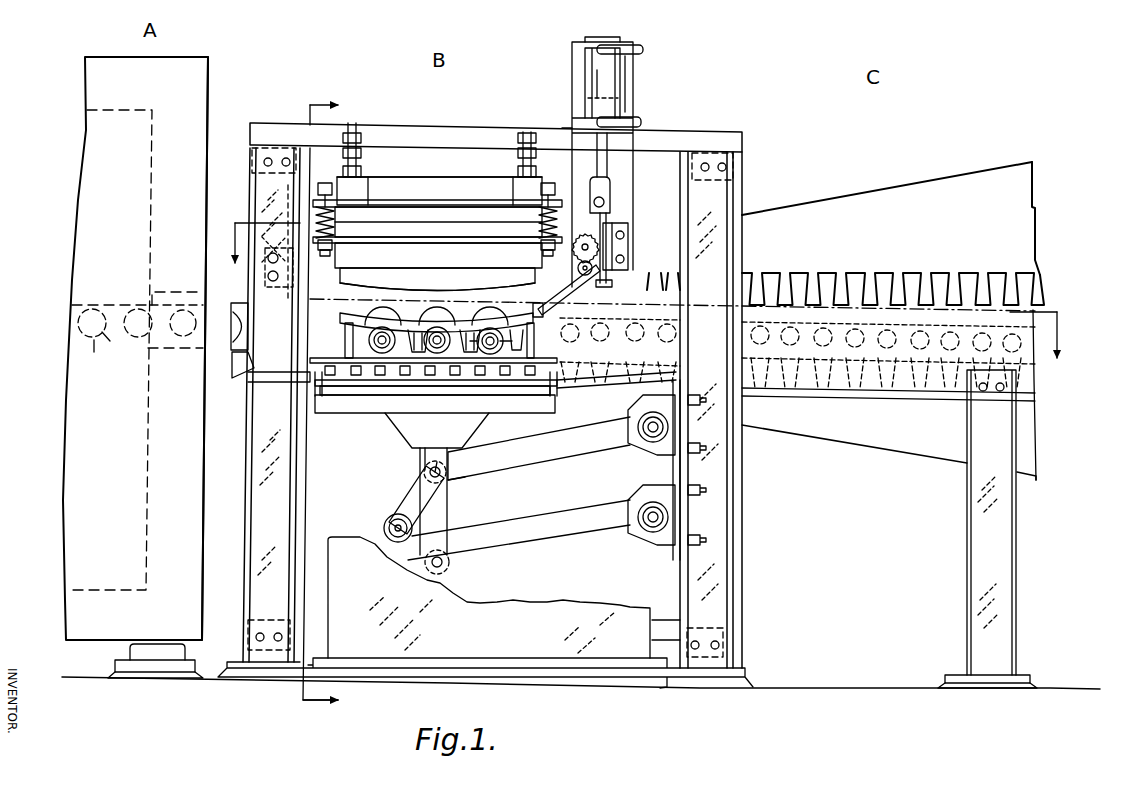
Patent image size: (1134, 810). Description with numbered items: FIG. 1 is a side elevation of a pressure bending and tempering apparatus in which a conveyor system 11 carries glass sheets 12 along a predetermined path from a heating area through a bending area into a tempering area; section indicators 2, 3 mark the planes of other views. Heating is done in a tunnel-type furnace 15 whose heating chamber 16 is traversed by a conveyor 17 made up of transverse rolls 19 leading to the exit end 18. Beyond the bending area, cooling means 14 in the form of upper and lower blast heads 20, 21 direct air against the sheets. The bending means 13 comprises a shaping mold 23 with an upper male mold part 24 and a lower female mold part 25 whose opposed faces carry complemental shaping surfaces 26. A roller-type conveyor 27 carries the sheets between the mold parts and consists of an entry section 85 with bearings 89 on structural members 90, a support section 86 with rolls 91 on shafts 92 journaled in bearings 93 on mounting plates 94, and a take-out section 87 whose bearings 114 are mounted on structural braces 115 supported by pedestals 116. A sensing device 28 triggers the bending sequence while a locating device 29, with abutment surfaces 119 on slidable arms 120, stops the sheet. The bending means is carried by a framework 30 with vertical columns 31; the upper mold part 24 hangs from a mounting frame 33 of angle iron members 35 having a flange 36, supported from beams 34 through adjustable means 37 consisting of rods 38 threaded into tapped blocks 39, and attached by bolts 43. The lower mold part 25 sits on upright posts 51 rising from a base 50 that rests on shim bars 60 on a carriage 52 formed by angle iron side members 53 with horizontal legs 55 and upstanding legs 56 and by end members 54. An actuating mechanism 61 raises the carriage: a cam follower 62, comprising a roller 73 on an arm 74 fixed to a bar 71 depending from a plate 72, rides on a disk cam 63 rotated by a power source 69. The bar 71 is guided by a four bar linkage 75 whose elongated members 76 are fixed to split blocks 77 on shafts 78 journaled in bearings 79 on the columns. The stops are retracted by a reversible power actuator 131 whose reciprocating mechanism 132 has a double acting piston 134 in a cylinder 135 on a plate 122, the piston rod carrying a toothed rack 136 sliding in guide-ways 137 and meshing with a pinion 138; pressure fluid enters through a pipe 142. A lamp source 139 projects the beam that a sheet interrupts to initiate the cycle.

The section line 2- 2 is at (350, 107).
The section line 3- 3 is at (213, 271).
The conveyor system 11 is at (84, 337).
The glass sheets 12 is at (88, 303).
The bending means 13 is at (405, 172).
The cooling means 14 is at (878, 187).
The tunnel-type furnace 15 is at (206, 76).
The heating chamber 16 is at (97, 210).
The conveyor 17 is at (94, 341).
The exit end 18 is at (208, 203).
The rolls 19 is at (102, 332).
The blast head 20 is at (1010, 236).
The blast head 21 is at (893, 432).
The shaping mold 23 is at (435, 220).
The male mold part 24 is at (452, 268).
The female mold part 25 is at (410, 321).
The shaping surfaces 26 is at (341, 285).
The roller-type conveyor 27 is at (387, 309).
The device 28 is at (268, 240).
The locating device 29 is at (535, 291).
The supporting framework 30 is at (276, 121).
The columns 31 is at (262, 462).
The mounting frame 33 is at (418, 192).
The beams 34 is at (468, 137).
The angle iron members 35 is at (452, 188).
The flange 36 is at (368, 205).
The adjustable means 37 is at (345, 156).
The rods 38 is at (362, 157).
The tapped blocks 39 is at (362, 137).
The bolts 43 is at (326, 182).
The base 50 is at (428, 415).
The upright posts 51 is at (530, 358).
The carriage 52 is at (362, 414).
The angle iron side members 53 is at (318, 390).
The end members 54 is at (376, 414).
The leg 55 is at (316, 402).
The leg 56 is at (314, 382).
The shim bars 60 is at (362, 402).
The actuating mechanism 61 is at (382, 492).
The cam follower 62 is at (385, 520).
The disk cam 63 is at (447, 543).
The power source 69 is at (486, 617).
The bar 71 is at (428, 487).
The plate 72 is at (414, 446).
The roller 73 is at (383, 527).
The arm 74 is at (417, 516).
The four bar linkage 75 is at (480, 478).
The elongated members 76 is at (540, 448).
The split blocks 77 is at (637, 443).
The shafts 78 is at (652, 445).
The bearings 79 is at (676, 434).
The entry section 85 is at (240, 311).
The support section 86 is at (443, 311).
The take-out section 87 is at (610, 298).
The bearings 89 is at (246, 357).
The structural members 90 is at (252, 385).
The rolls 91 is at (487, 320).
The shafts 92 is at (436, 353).
The bearings 93 is at (381, 353).
The mounting plates 94 is at (498, 355).
The bearings 114 is at (592, 340).
The structural braces 115 is at (618, 387).
The pedestals 116 is at (980, 535).
The abutment surfaces 119 is at (532, 311).
The arms 120 is at (589, 274).
The plate 122 is at (617, 177).
The reversible power actuator 131 is at (618, 215).
The reciprocating mechanism 132 is at (637, 62).
The double acting piston 134 is at (628, 100).
The cylinder 135 is at (617, 82).
The toothed rack 136 is at (612, 283).
The guide-ways 137 is at (630, 247).
The pinion 138 is at (543, 239).
The lamp source 139 is at (274, 224).
The pipe 142 is at (643, 121).